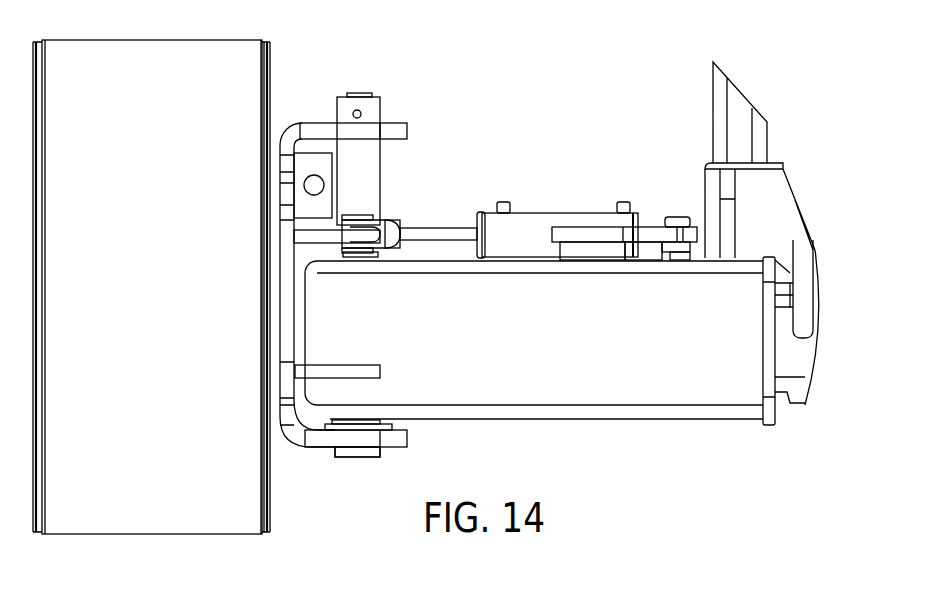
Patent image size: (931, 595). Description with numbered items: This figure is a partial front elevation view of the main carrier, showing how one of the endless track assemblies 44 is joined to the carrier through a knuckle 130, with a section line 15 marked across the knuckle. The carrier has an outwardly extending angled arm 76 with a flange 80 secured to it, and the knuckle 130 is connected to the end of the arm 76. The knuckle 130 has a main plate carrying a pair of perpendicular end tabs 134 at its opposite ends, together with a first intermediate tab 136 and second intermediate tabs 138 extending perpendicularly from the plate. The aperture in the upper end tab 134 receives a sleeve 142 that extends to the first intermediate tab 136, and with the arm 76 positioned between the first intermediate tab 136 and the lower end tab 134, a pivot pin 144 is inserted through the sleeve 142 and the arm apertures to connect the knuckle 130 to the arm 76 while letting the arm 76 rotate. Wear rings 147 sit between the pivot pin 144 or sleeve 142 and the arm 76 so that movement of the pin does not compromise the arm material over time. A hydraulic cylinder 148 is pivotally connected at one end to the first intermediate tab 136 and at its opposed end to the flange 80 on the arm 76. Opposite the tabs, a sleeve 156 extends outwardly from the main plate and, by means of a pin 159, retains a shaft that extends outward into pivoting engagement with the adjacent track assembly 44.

The endless track assembly 44 is at (150, 556).
The section line 15 is at (358, 80).
The angled arm 76 is at (687, 413).
The flange 80 is at (597, 235).
The knuckle 130 is at (407, 128).
The end tab 134 is at (322, 128).
The first intermediate tab 136 is at (345, 238).
The second intermediate tab 138 is at (380, 372).
The sleeve 142 is at (380, 95).
The pivot pin 144 is at (370, 457).
The wear ring 147 is at (377, 420).
The hydraulic cylinder 148 is at (573, 184).
The sleeve 156 is at (312, 165).
The pin 159 is at (324, 182).